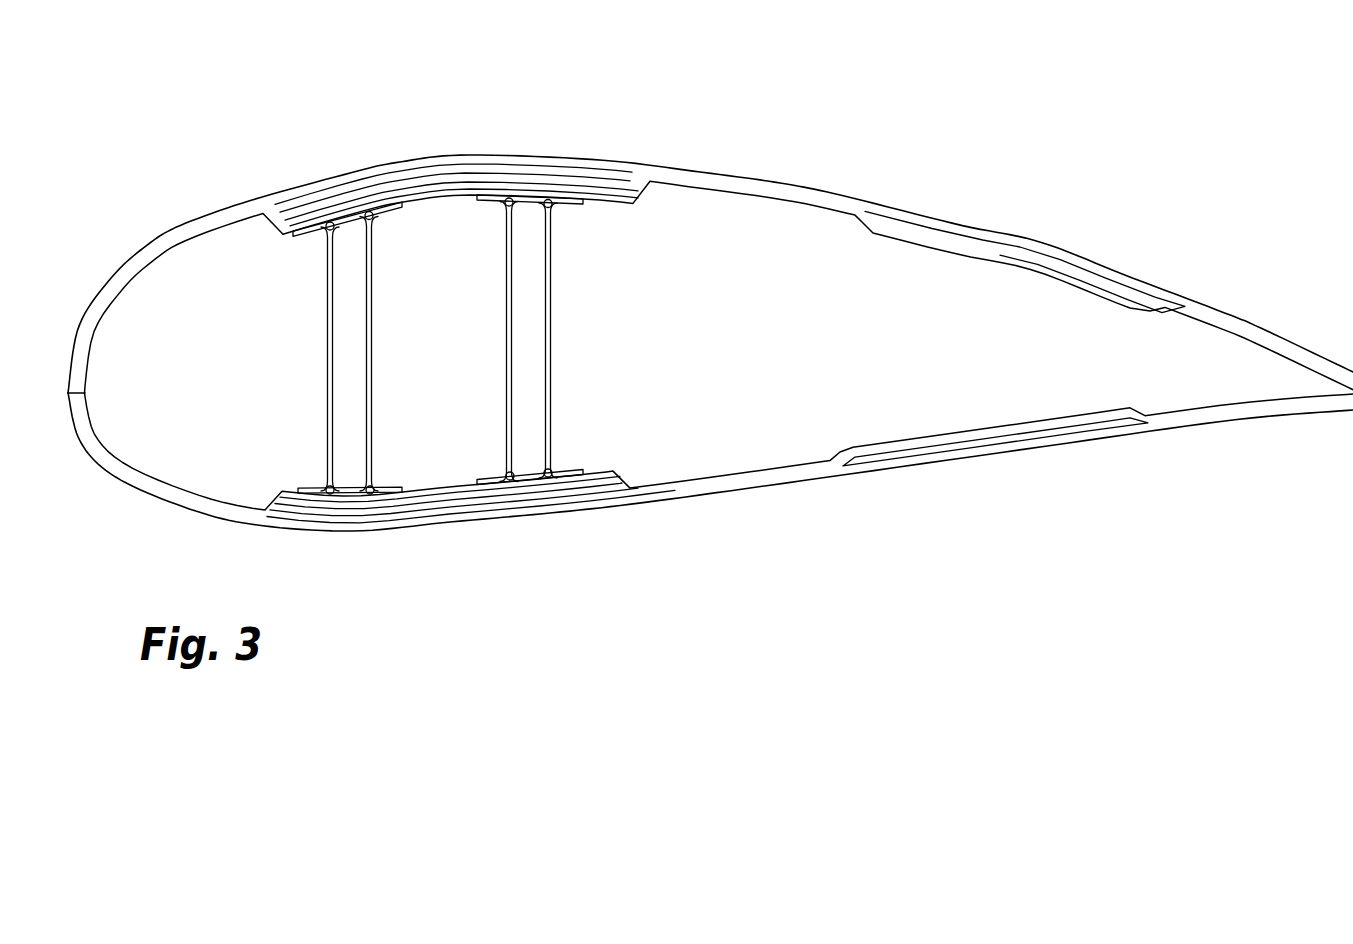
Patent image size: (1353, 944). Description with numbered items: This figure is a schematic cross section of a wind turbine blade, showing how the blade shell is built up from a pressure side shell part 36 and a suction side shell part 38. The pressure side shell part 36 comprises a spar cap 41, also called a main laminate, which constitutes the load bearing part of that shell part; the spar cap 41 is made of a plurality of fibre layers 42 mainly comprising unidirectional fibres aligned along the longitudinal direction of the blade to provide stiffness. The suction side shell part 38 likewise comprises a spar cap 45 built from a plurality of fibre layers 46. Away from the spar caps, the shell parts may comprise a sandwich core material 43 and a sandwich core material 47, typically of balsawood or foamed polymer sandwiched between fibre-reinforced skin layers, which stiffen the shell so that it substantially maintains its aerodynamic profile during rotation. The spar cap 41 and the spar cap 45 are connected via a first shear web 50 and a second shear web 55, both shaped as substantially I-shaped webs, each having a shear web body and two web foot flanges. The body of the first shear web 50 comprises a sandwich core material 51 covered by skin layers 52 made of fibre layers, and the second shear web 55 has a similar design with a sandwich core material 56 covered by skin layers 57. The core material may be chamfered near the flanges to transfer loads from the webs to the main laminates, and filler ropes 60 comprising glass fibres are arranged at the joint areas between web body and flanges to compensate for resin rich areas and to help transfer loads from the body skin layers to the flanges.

The pressure side shell part 36 is at (800, 483).
The suction side shell part 38 is at (779, 182).
The spar cap 41 is at (471, 549).
The fibre layers 42 is at (440, 507).
The sandwich core material 43 is at (1012, 436).
The spar cap 45 is at (456, 129).
The fibre layers 46 is at (547, 183).
The sandwich core material 47 is at (1000, 245).
The first shear web 50 is at (373, 347).
The sandwich core material 51 is at (364, 386).
The skin layers 52 is at (374, 284).
The second shear web 55 is at (568, 340).
The sandwich core material 56 is at (545, 375).
The skin layers 57 is at (557, 300).
The filler ropes 60 is at (506, 210).